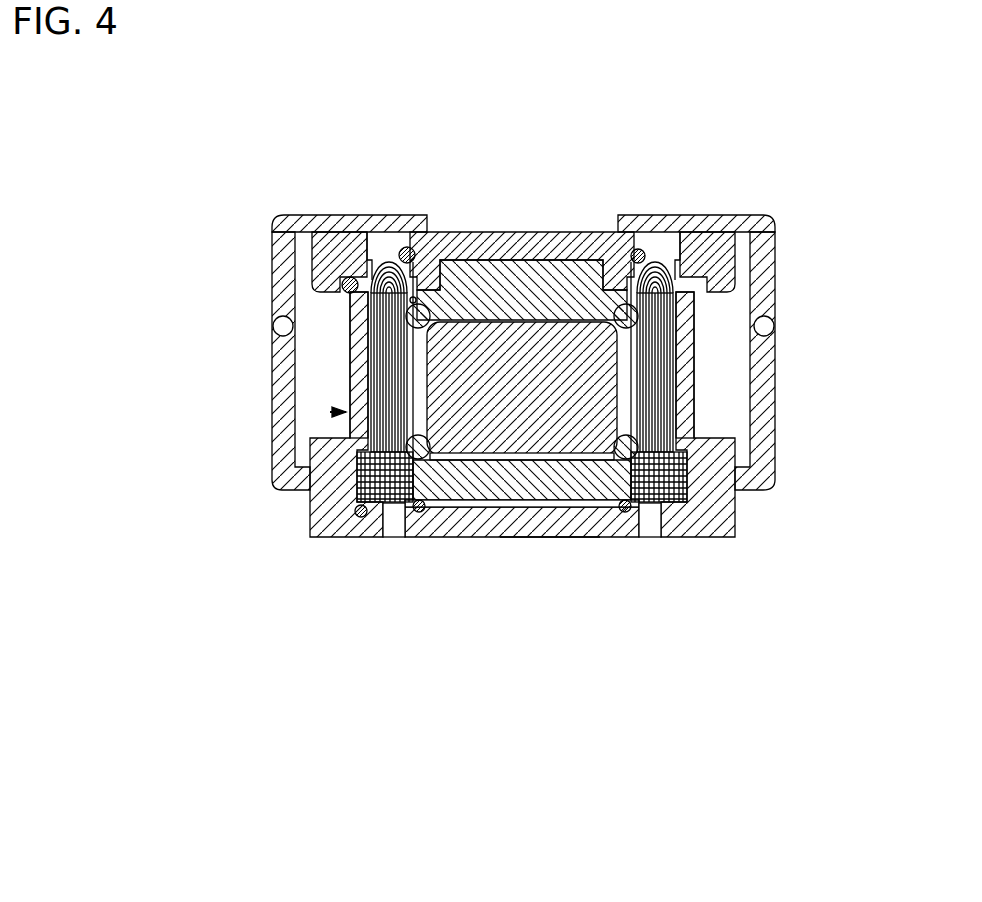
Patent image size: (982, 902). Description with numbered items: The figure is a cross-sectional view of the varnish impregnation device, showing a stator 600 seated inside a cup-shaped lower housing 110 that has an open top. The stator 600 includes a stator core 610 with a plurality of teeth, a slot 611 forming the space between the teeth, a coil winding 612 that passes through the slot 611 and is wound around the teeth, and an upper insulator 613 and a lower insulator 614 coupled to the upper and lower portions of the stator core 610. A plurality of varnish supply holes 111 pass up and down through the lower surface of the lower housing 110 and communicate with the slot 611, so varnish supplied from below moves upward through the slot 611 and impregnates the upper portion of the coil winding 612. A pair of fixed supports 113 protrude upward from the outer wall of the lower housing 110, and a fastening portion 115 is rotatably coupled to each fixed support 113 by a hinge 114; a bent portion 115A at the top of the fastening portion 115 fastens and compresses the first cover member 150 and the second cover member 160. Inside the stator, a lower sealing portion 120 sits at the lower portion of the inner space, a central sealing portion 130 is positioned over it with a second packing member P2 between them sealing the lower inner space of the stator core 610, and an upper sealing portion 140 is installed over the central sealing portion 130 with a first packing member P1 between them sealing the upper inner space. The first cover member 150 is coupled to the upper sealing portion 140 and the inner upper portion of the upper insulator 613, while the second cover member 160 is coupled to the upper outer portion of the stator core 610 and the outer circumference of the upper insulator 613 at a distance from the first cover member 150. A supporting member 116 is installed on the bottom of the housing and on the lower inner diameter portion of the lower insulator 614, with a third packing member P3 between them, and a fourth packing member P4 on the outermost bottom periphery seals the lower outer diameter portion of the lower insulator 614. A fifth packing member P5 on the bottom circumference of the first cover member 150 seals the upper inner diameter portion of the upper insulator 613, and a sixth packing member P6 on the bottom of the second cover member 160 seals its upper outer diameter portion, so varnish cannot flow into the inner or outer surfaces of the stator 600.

The lower housing 110 is at (310, 520).
The varnish supply holes 111 is at (394, 537).
The fixed support 113 is at (349, 400).
The hinge 114 is at (274, 326).
The fastening portion 115 is at (290, 266).
The bent portion 115A is at (318, 223).
The supporting member 116 is at (556, 532).
The lower sealing portion 120 is at (434, 507).
The central sealing portion 130 is at (500, 497).
The upper sealing portion 140 is at (573, 246).
The first cover member 150 is at (521, 242).
The second cover member 160 is at (355, 246).
The stator 600 is at (330, 412).
The stator core 610 is at (515, 425).
The slot 611 is at (386, 370).
The coil winding 612 is at (378, 328).
The upper insulator 613 is at (638, 249).
The lower insulator 614 is at (690, 502).
The first packing member P1 is at (414, 297).
The second packing member P2 is at (420, 512).
The third packing member P3 is at (626, 512).
The fourth packing member P4 is at (358, 517).
The fifth packing member P5 is at (408, 247).
The sixth packing member P6 is at (342, 285).